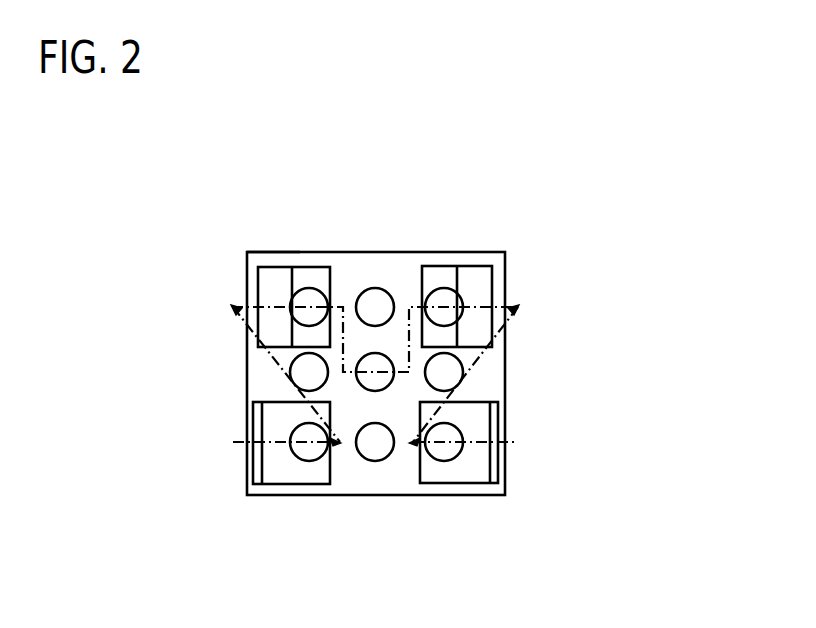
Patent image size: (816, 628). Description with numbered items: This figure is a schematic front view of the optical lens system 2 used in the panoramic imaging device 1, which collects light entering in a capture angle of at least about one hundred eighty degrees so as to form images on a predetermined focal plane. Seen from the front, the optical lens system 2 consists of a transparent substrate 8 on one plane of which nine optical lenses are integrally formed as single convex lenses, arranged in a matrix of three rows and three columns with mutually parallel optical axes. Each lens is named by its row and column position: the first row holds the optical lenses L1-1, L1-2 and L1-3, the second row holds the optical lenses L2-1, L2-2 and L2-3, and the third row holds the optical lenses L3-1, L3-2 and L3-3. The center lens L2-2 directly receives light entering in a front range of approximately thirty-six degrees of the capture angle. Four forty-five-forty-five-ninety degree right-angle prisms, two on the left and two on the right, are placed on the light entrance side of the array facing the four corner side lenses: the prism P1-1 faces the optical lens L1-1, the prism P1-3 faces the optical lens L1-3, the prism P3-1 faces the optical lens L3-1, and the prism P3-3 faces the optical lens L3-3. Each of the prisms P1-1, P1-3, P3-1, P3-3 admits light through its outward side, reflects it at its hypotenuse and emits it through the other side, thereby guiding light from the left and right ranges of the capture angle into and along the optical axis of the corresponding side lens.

The panoramic imaging device 1 is at (383, 112).
The optical lens system 2 is at (465, 158).
The transparent substrate 8 is at (262, 252).
The 45-45-90 degree right-angle prism P1-1 is at (277, 282).
The 45-45-90 degree right-angle prism P1-3 is at (478, 274).
The 45-45-90 degree right-angle prism P3-1 is at (275, 475).
The 45-45-90 degree right-angle prism P3-3 is at (473, 475).
The optical lens L1-1 is at (309, 300).
The optical lens L1-2 is at (375, 300).
The optical lens L1-3 is at (444, 300).
The optical lens L2-1 is at (298, 372).
The optical lens L2-2 is at (365, 380).
The optical lens L2-3 is at (453, 372).
The optical lens L3-1 is at (308, 452).
The optical lens L3-2 is at (378, 455).
The optical lens L3-3 is at (448, 455).